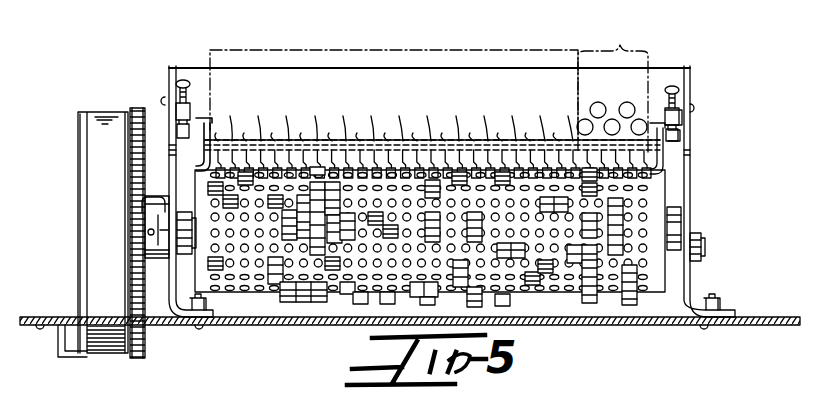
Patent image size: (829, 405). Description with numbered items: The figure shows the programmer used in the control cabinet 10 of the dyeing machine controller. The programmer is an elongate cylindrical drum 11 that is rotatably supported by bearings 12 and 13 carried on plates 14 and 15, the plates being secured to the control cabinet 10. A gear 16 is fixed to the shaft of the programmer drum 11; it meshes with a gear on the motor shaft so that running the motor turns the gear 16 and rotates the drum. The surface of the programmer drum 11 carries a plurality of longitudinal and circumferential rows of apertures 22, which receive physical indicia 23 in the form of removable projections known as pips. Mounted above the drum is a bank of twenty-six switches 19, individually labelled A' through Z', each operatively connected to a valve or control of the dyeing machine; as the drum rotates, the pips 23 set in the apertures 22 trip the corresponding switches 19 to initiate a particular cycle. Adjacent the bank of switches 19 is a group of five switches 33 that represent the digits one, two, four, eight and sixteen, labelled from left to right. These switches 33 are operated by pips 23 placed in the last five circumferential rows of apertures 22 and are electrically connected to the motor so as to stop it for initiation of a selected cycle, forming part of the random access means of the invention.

The control cabinet 10 is at (623, 326).
The programmer drum 11 is at (464, 261).
The bearing 12 is at (693, 234).
The bearing 13 is at (143, 202).
The plate 14 is at (690, 180).
The plate 15 is at (168, 80).
The gear 16 is at (134, 170).
The bank of switches 19 is at (415, 51).
The apertures 22 is at (226, 291).
The physical indicia 23 is at (290, 302).
The group of five switches 33 is at (623, 51).